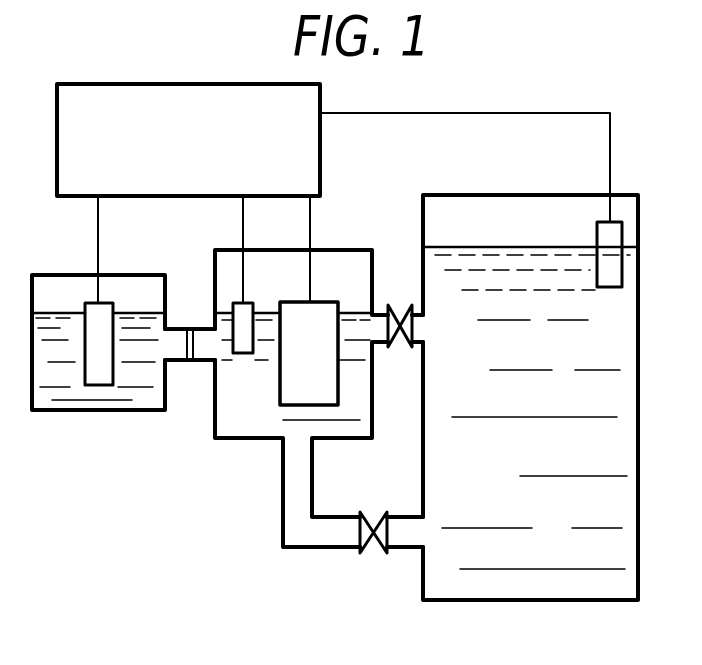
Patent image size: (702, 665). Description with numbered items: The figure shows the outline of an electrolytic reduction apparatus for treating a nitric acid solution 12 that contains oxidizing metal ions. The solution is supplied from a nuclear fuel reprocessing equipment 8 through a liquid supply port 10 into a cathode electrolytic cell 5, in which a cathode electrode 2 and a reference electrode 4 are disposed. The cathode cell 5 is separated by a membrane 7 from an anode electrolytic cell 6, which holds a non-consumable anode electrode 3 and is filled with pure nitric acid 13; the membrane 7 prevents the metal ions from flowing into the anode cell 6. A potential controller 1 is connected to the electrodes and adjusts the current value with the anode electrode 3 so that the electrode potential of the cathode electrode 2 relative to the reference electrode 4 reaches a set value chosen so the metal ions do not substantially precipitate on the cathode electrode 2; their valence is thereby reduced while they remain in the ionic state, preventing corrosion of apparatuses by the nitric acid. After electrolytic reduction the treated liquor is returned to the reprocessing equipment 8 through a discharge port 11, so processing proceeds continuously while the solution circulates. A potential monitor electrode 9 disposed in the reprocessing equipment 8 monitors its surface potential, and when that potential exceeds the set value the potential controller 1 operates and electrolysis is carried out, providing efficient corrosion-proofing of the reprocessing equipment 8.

The potential controller 1 is at (320, 178).
The cathode electrode 2 is at (280, 378).
The anode electrode 3 is at (83, 373).
The reference electrode 4 is at (243, 353).
The cathode electrolytic cell 5 is at (229, 440).
The anode electrolytic cell 6 is at (120, 410).
The membrane 7 is at (190, 360).
The nuclear fuel reprocessing equipment 8 is at (568, 195).
The potential monitor electrode 9 is at (612, 288).
The liquid supply port 10 is at (400, 305).
The discharge port 11 is at (373, 553).
The nitric acid solution 12 is at (575, 600).
The pure nitric acid 13 is at (40, 410).